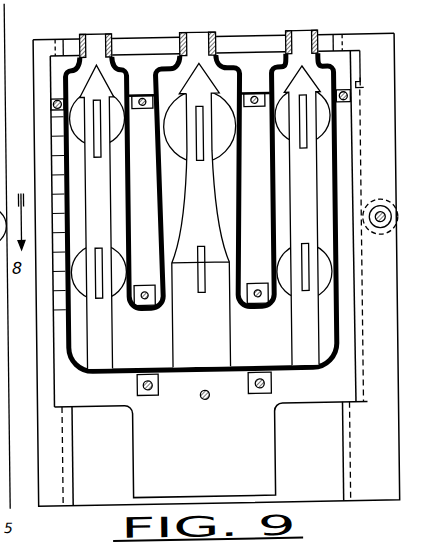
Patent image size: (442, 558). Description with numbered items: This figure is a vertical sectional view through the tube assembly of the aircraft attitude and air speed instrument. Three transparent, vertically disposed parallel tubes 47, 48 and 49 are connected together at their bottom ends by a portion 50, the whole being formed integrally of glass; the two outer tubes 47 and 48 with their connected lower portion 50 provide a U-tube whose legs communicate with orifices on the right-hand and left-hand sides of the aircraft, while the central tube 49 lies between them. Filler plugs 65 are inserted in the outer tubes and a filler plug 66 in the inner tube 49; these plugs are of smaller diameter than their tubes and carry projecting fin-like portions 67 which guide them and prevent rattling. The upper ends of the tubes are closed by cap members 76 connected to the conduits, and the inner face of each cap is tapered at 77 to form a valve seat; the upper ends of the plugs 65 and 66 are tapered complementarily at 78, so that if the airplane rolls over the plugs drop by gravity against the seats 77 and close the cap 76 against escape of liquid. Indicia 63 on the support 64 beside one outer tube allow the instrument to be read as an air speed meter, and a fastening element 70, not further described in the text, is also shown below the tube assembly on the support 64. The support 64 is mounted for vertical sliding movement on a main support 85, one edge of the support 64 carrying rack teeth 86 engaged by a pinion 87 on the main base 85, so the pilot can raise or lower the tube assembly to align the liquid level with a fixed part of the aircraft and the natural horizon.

The outer tube 47 is at (124, 208).
The outer tube 48 is at (275, 208).
The central tube 49 is at (160, 196).
The connecting portion 50 is at (107, 383).
The indicia 63 is at (62, 298).
The support 64 is at (216, 269).
The filler plug 65 is at (107, 181).
The filler plug 66 is at (192, 183).
The fin-like portion 67 is at (155, 133).
The screw 70 is at (208, 396).
The cap member 76 is at (157, 45).
The valve seat 77 is at (173, 60).
The tapered upper end 78 is at (64, 87).
The main support 85 is at (357, 495).
The rack teeth 86 is at (365, 88).
The pinion 87 is at (378, 200).